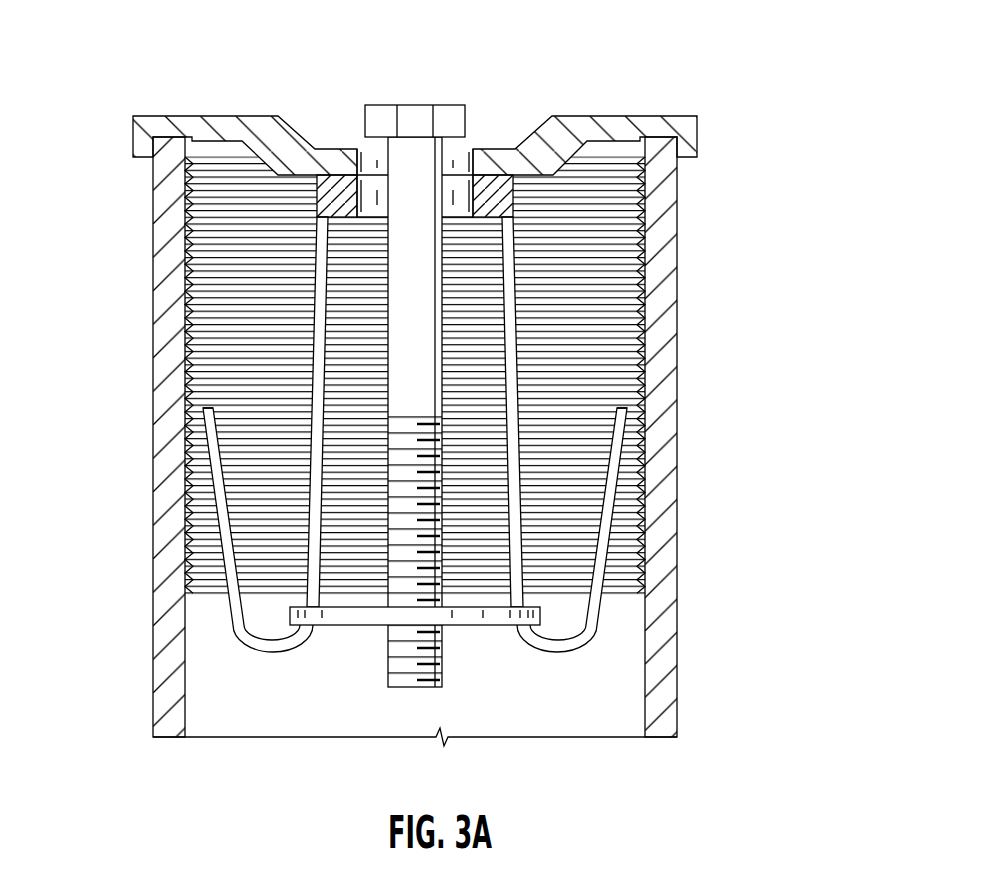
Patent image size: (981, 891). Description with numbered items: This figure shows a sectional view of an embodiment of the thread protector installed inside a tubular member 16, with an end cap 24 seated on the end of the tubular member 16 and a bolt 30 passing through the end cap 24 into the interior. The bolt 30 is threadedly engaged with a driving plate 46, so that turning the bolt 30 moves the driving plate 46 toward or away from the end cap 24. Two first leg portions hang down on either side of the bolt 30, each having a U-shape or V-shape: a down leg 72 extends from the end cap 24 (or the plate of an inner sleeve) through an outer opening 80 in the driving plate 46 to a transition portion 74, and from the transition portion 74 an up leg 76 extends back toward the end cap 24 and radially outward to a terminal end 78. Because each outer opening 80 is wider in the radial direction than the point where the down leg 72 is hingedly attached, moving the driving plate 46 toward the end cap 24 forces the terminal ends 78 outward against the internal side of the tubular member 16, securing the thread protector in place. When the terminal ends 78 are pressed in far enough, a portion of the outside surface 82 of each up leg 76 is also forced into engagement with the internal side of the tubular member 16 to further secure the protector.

The tubular member 16 is at (661, 372).
The end cap 24 is at (578, 116).
The bolt 30 is at (433, 158).
The driving plate 46 is at (488, 627).
The down leg 72 is at (314, 319).
The transition portion 74 is at (275, 652).
The up leg 76 is at (422, 461).
The terminal end 78 is at (206, 407).
The outer opening 80 is at (330, 637).
The outside surface 82 is at (622, 526).